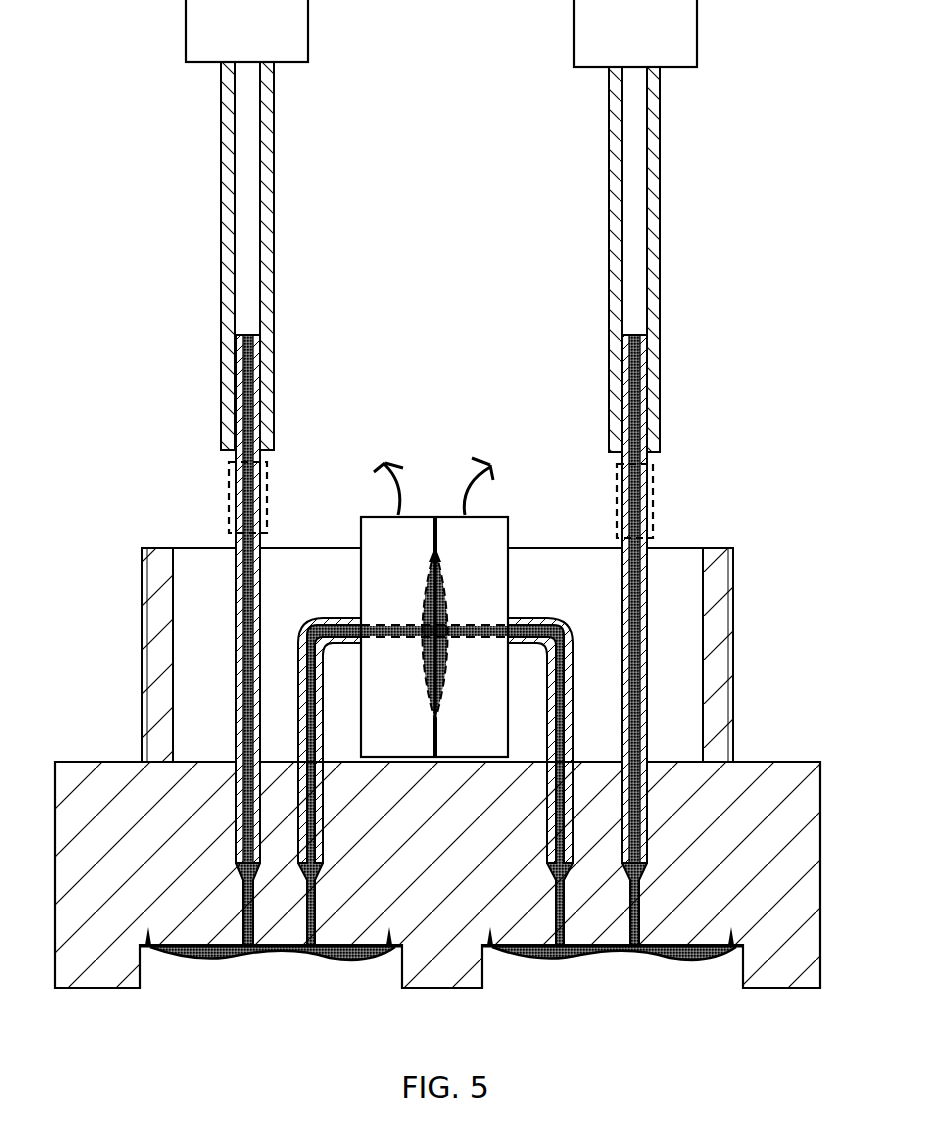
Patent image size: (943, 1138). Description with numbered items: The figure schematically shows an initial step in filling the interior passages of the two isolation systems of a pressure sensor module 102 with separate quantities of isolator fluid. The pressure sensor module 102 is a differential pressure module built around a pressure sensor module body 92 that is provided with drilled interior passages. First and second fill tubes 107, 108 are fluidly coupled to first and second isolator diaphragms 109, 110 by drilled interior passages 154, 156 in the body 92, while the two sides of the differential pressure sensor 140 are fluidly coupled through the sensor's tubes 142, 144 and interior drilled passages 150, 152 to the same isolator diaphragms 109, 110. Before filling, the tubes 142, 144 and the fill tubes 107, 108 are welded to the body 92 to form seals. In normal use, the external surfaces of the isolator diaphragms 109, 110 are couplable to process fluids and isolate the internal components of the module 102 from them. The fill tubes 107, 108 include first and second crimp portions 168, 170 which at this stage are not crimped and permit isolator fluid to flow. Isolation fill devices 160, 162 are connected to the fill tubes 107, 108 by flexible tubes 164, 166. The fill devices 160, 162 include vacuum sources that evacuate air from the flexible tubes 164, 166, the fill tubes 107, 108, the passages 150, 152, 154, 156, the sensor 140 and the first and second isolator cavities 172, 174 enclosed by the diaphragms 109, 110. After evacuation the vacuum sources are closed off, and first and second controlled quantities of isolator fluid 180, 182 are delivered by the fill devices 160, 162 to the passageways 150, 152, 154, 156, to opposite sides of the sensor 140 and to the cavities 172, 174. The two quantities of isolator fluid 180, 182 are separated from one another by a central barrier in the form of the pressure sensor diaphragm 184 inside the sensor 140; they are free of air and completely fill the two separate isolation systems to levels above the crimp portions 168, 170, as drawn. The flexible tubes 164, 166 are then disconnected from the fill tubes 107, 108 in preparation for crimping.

The pressure sensor module body 92 is at (409, 810).
The pressure sensor module 102 is at (170, 478).
The first fill tube 107 is at (233, 658).
The second fill tube 108 is at (645, 645).
The first isolator diaphragm 109 is at (270, 960).
The second isolator diaphragm 110 is at (613, 960).
The differential pressure sensor 140 is at (450, 515).
The sensor tube 142 is at (565, 633).
The sensor tube 144 is at (305, 633).
The interior drilled passage 150 is at (557, 925).
The interior drilled passage 152 is at (317, 923).
The drilled interior passage 154 is at (633, 918).
The drilled interior passage 156 is at (227, 923).
The isolation fill device 160 is at (611, 48).
The isolation fill device 162 is at (222, 44).
The flexible tube 164 is at (660, 160).
The flexible tube 166 is at (221, 180).
The first crimp portion 168 is at (652, 470).
The second crimp portion 170 is at (265, 470).
The first isolator cavity 172 is at (743, 988).
The second isolator cavity 174 is at (240, 912).
The first controlled quantity of isolator fluid 180 is at (242, 588).
The second controlled quantity of isolator fluid 182 is at (645, 595).
The pressure sensor diaphragm 184 is at (437, 535).